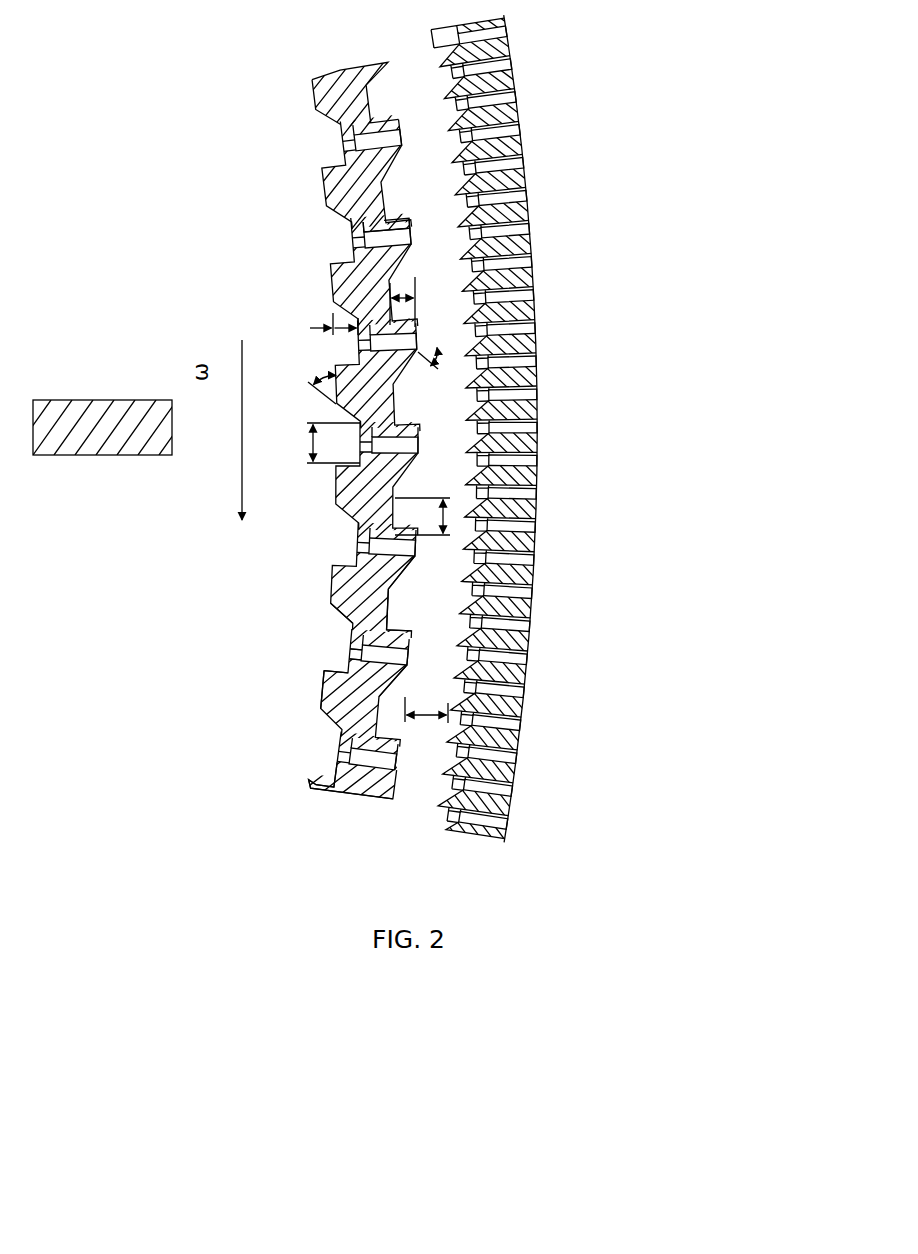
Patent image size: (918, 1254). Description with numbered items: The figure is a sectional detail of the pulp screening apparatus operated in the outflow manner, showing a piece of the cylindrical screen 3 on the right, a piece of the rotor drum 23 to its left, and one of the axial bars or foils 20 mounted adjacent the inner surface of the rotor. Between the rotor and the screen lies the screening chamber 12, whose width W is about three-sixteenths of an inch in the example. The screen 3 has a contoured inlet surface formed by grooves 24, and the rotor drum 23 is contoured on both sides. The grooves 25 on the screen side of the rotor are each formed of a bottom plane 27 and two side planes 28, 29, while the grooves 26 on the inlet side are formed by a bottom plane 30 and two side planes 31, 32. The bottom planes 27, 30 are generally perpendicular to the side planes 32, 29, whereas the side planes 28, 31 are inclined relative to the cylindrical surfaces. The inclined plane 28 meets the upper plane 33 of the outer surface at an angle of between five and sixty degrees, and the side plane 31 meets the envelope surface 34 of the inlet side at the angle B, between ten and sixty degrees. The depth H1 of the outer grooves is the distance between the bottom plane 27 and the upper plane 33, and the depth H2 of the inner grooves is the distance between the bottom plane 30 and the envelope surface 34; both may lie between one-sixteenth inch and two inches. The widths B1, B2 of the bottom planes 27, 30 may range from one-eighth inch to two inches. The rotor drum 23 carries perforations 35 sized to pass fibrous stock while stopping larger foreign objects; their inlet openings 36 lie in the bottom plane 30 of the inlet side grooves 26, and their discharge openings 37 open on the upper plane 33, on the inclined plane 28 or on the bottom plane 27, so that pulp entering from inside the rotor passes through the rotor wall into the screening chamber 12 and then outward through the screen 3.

The cylindrical screen 3 is at (481, 430).
The screening chamber 12 is at (432, 205).
The axial bars or foils 20 is at (103, 443).
The rotor drum 23 is at (333, 98).
The grooves 24 is at (438, 52).
The grooves 25 is at (383, 722).
The grooves 26 is at (325, 748).
The bottom plane 27 is at (385, 617).
The side plane 28 is at (385, 598).
The side plane 29 is at (400, 630).
The bottom plane 30 is at (348, 642).
The side plane 31 is at (340, 620).
The side plane 32 is at (332, 658).
The upper plane 33 is at (405, 687).
The envelope surface 34 is at (322, 700).
The perforations 35 is at (385, 238).
The inlet openings 36 is at (383, 242).
The discharge openings 37 is at (415, 237).
The distance between bottom plane and upper plane H1 is at (418, 302).
The distance between bottom plane and envelope surface H2 is at (328, 322).
The angle beta B is at (318, 381).
The width of bottom plane B1 is at (422, 516).
The width of bottom plane B2 is at (321, 443).
The width of the screening chamber W is at (426, 708).